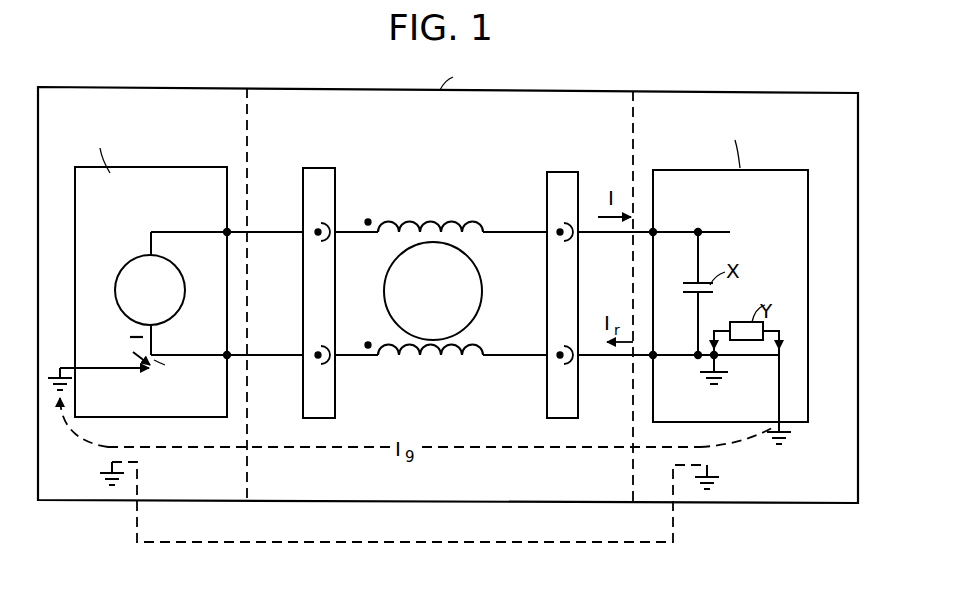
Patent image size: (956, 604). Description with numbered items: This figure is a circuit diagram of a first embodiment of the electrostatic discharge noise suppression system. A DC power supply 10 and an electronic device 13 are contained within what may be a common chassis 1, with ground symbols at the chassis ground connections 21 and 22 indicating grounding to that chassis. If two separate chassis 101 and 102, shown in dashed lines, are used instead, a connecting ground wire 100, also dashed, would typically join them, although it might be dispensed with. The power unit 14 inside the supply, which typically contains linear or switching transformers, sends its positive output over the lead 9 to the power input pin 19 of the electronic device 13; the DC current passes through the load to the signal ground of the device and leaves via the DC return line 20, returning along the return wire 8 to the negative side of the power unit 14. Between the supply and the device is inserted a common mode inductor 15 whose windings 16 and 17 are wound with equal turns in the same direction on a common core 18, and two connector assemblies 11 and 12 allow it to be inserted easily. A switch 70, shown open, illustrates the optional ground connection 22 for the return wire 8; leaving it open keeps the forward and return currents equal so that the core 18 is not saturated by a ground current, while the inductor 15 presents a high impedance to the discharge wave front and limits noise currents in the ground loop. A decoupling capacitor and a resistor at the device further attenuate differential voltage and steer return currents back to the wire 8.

The common chassis 1 is at (603, 91).
The return wire 8 is at (258, 355).
The lead 9 is at (255, 232).
The DC power supply 10 is at (188, 167).
The connector assembly 11 is at (315, 168).
The connector assembly 12 is at (562, 172).
The electronic device 13 is at (785, 170).
The power unit 14 is at (170, 298).
The common mode inductor 15 is at (443, 263).
The winding 16 is at (470, 220).
The winding 17 is at (452, 350).
The common core 18 is at (470, 308).
The power input pin 19 is at (668, 232).
The DC return line 20 is at (665, 355).
The chassis ground connection 21 is at (790, 436).
The chassis ground connection 22 is at (60, 366).
The switch 70 is at (165, 365).
The connecting ground wire 100 is at (515, 545).
The separate chassis 101 is at (72, 502).
The separate chassis 102 is at (727, 504).